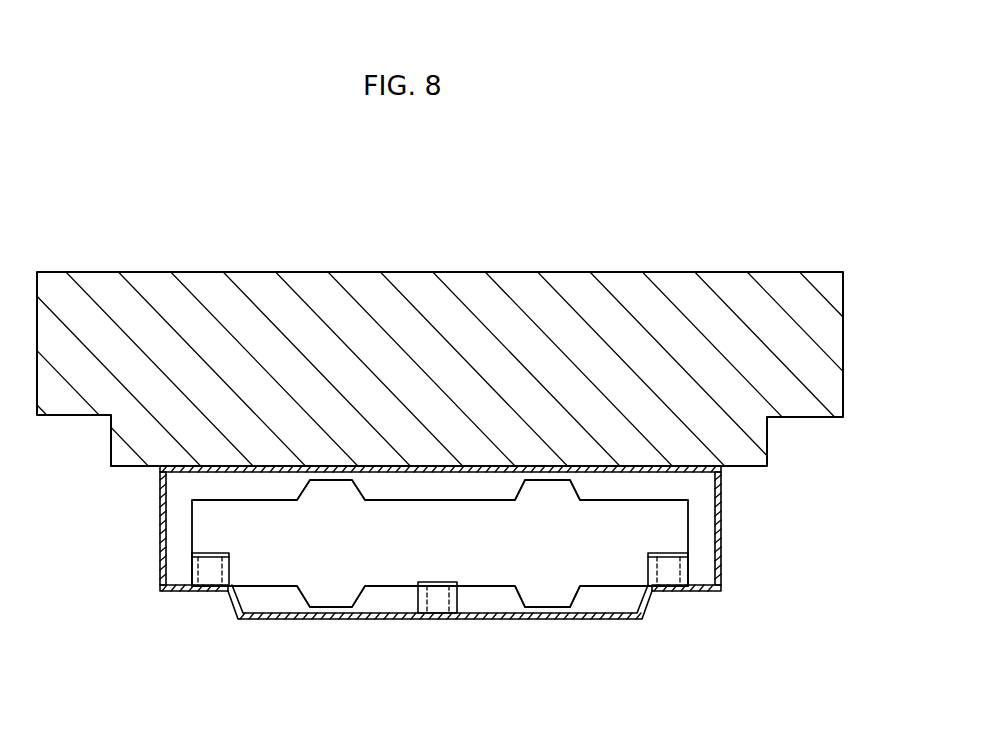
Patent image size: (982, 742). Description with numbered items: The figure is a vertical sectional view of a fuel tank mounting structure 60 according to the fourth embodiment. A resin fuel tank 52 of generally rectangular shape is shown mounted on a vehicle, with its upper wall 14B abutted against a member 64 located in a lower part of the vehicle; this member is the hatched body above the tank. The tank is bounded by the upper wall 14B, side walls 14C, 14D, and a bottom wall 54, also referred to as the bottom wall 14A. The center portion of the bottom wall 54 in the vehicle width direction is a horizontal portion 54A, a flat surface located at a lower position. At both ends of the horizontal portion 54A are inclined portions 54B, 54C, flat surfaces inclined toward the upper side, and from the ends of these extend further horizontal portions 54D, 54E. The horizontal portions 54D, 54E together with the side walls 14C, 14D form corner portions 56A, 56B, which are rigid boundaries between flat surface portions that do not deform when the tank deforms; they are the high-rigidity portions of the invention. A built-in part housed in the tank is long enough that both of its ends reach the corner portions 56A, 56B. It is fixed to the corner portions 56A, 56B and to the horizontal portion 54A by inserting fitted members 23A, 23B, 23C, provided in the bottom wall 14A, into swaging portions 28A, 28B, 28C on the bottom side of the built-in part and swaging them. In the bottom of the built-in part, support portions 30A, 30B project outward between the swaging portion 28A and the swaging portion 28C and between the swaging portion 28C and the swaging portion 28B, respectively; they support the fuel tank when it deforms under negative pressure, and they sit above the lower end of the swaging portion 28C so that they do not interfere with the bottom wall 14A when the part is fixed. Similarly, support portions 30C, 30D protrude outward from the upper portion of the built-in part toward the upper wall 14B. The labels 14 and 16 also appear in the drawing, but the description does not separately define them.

The fuel tank mounting structure 60 is at (594, 377).
The member 64 is at (128, 467).
The housing 14 is at (440, 542).
The bottom wall 14A is at (461, 638).
The upper wall 14B is at (430, 466).
The side wall 14C is at (721, 527).
The side wall 14D is at (160, 515).
The circuit body 16 is at (440, 544).
The fitted member 23A is at (690, 572).
The fitted member 23B is at (222, 563).
The fitted member 23C is at (452, 597).
The swaging portion 28A is at (637, 548).
The swaging portion 28B is at (246, 547).
The swaging portion 28C is at (451, 573).
The support portion 30A is at (545, 619).
The support portion 30B is at (335, 618).
The support portion 30C is at (553, 480).
The support portion 30D is at (328, 480).
The resin fuel tank 52 is at (670, 464).
The bottom wall 54 is at (470, 619).
The horizontal portion 54A is at (500, 619).
The inclined portion 54B is at (648, 612).
The inclined portion 54C is at (232, 616).
The horizontal portion 54D is at (705, 593).
The horizontal portion 54E is at (170, 591).
The corner portion 56A is at (721, 591).
The corner portion 56B is at (160, 588).